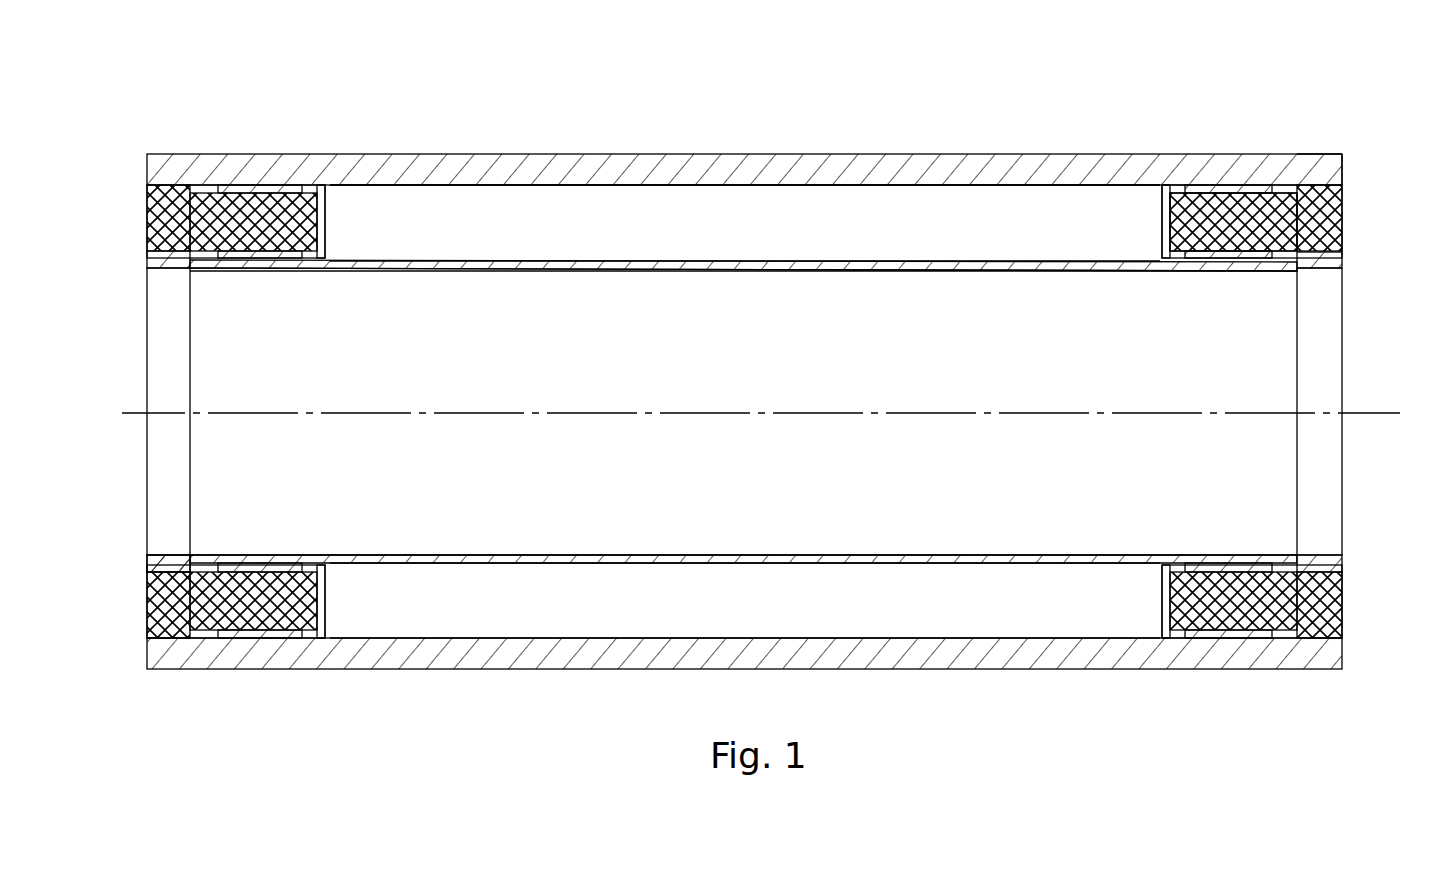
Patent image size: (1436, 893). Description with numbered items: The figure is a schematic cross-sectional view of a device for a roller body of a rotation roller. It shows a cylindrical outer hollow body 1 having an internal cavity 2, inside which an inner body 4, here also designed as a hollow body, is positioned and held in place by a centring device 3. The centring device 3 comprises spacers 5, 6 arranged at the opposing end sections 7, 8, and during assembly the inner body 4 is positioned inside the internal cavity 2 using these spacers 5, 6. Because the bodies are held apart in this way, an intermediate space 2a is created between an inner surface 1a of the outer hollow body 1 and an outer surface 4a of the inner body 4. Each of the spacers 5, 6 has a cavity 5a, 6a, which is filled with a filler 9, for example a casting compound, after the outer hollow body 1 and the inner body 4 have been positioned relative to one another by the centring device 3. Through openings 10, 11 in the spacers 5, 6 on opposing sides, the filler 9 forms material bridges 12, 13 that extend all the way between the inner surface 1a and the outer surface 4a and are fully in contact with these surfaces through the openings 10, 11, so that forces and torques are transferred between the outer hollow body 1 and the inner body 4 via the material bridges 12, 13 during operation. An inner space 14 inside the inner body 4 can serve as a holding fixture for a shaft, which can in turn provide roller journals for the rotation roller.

The outer hollow body 1 is at (533, 172).
The inner surface of the outer hollow body 1a is at (875, 190).
The internal cavity 2 is at (650, 220).
The intermediate space 2a is at (1083, 607).
The centring device 3 is at (322, 212).
The inner body 4 is at (735, 265).
The outer surface of the inner body 4a is at (1055, 263).
The spacer 5 is at (203, 565).
The cavity of the spacer 5a is at (213, 593).
The spacer 6 is at (1180, 188).
The cavity of the spacer 6a is at (1323, 157).
The end section 7 is at (147, 345).
The end section 8 is at (1342, 357).
The filler 9 is at (152, 205).
The opening 10 is at (1228, 263).
The opening 11 is at (1230, 188).
The material bridge 12 is at (267, 603).
The material bridge 13 is at (1240, 235).
The inner space 14 is at (800, 480).